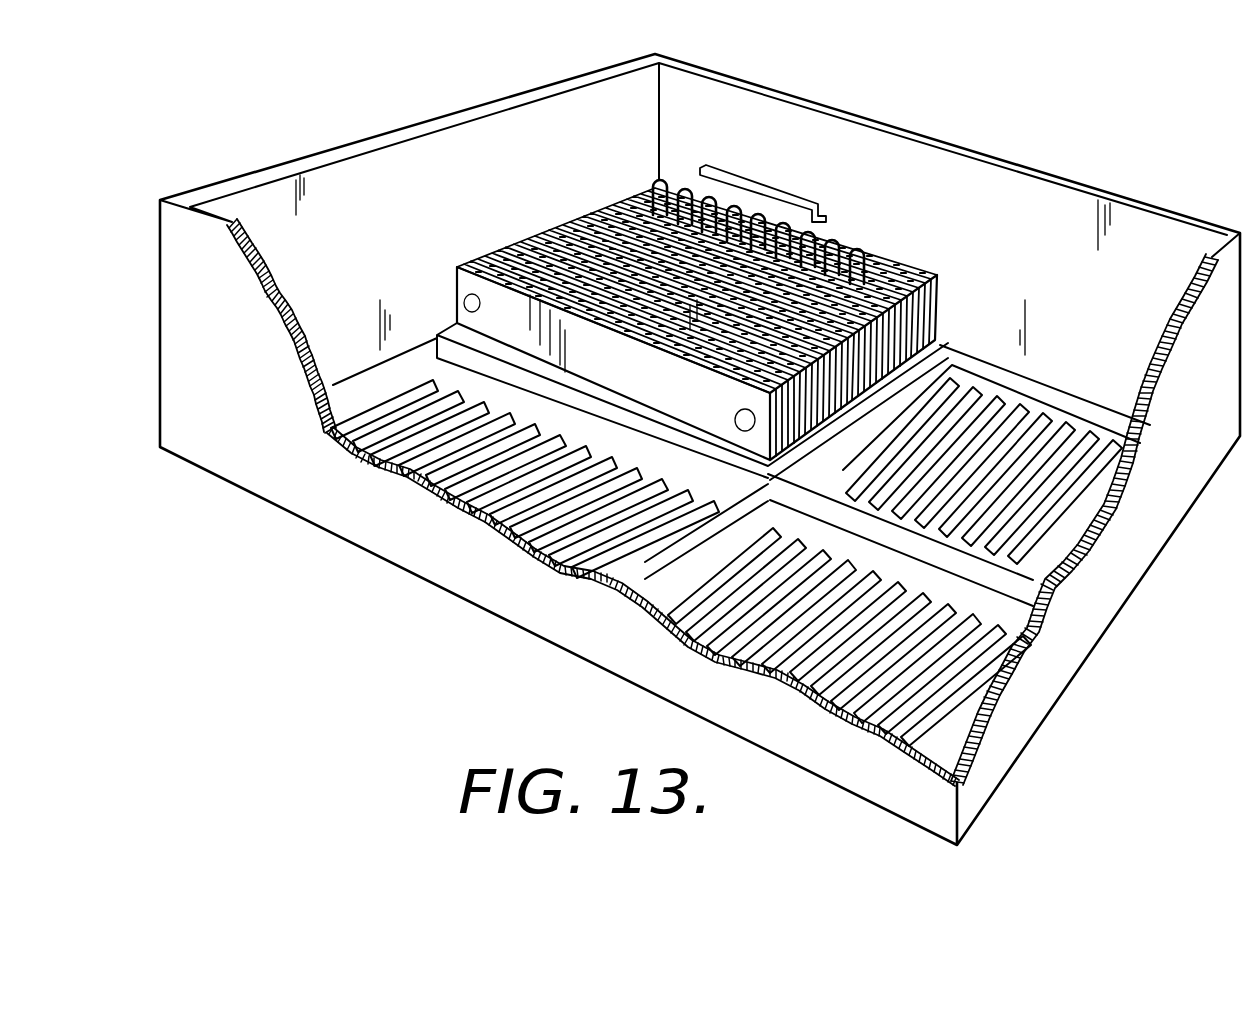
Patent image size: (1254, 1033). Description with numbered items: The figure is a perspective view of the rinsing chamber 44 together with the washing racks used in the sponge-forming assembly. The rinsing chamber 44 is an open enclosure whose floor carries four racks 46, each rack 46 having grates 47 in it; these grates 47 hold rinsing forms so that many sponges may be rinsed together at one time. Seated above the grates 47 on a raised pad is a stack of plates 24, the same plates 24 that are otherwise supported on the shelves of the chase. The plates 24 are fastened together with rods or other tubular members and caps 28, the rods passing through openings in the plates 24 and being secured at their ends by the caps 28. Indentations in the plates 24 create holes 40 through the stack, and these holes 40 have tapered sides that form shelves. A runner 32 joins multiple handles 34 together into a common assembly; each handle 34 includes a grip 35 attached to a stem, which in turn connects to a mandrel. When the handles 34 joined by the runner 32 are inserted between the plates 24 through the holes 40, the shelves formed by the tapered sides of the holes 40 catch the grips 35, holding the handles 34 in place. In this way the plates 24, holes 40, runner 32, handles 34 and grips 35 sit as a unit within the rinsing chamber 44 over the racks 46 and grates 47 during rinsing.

The plates 24 is at (720, 286).
The caps 28 is at (457, 268).
The runner 32 is at (683, 180).
The handles 34 is at (880, 268).
The grips 35 is at (812, 254).
The holes 40 is at (553, 257).
The rinsing chamber 44 is at (992, 182).
The racks 46 is at (330, 430).
The grates 47 is at (462, 472).